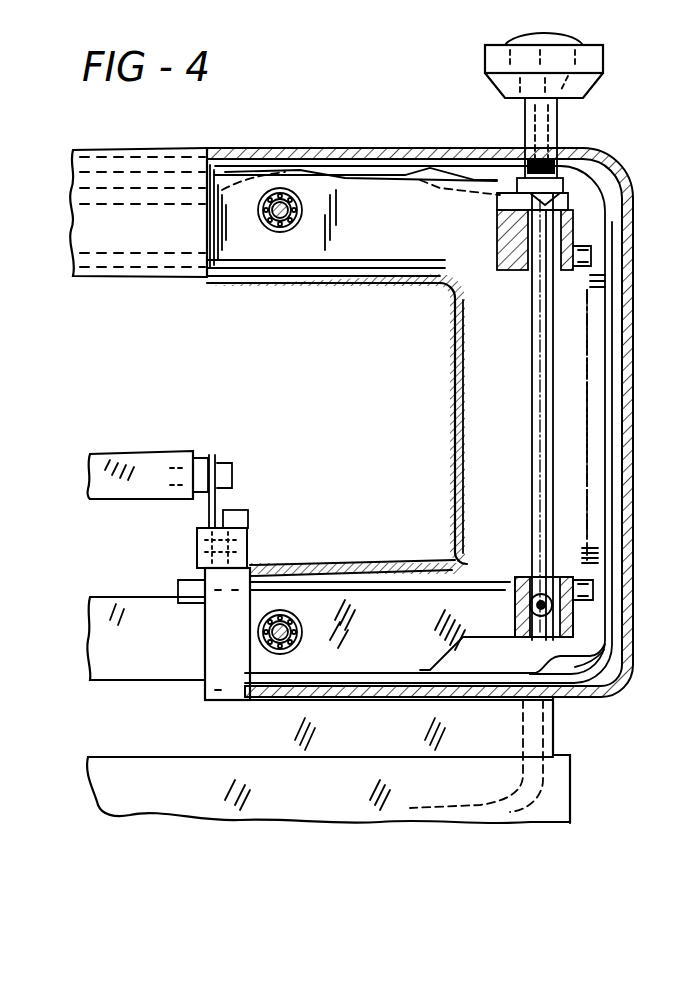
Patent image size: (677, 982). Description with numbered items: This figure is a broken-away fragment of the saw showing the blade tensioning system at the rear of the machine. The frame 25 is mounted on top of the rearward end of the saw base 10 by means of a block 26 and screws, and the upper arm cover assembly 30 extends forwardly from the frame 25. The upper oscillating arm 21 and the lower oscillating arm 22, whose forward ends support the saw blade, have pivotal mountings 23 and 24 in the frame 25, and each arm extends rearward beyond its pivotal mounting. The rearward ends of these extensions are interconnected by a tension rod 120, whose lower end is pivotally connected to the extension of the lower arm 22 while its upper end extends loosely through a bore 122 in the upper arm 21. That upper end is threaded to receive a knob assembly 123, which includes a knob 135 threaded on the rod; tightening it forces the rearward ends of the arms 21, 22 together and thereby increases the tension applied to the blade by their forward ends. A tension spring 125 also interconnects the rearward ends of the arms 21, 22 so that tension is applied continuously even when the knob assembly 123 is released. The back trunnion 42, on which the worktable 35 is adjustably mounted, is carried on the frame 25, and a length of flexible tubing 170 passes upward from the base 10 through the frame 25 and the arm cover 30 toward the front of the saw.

The saw base 10 is at (165, 805).
The upper oscillating arm 21 is at (225, 243).
The lower oscillating arm 22 is at (145, 668).
The pivotal mounting 23 is at (302, 215).
The pivotal mounting 24 is at (302, 632).
The frame 25 is at (452, 446).
The block 26 is at (548, 736).
The upper arm cover assembly 30 is at (85, 152).
The worktable 35 is at (130, 466).
The back trunnion 42 is at (208, 499).
The tension rod 120 is at (540, 487).
The bore 122 is at (522, 586).
The knob assembly 123 is at (485, 97).
The tension spring 125 is at (585, 415).
The knob 135 is at (497, 63).
The flexible tubing 170 is at (590, 665).